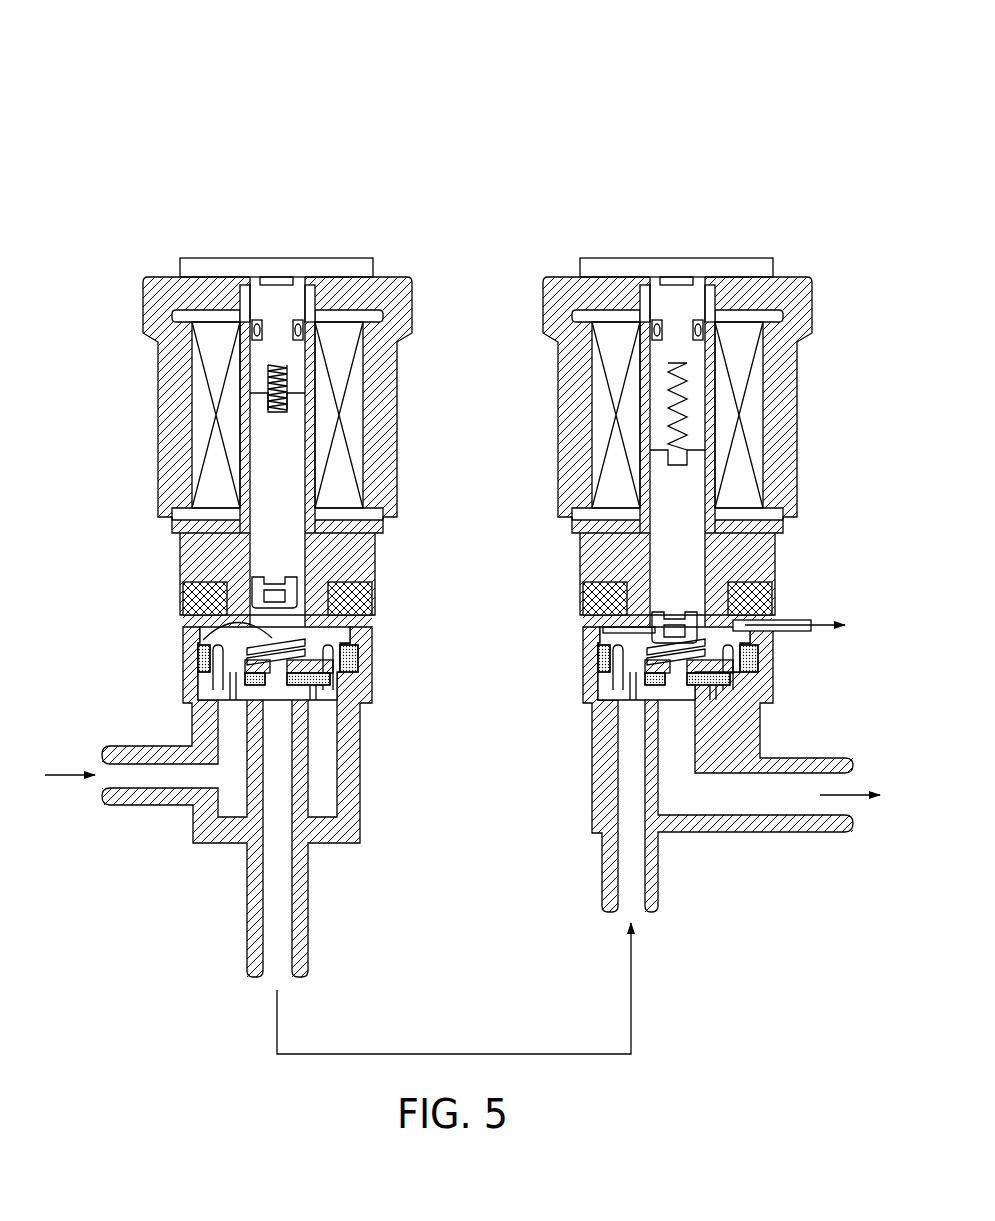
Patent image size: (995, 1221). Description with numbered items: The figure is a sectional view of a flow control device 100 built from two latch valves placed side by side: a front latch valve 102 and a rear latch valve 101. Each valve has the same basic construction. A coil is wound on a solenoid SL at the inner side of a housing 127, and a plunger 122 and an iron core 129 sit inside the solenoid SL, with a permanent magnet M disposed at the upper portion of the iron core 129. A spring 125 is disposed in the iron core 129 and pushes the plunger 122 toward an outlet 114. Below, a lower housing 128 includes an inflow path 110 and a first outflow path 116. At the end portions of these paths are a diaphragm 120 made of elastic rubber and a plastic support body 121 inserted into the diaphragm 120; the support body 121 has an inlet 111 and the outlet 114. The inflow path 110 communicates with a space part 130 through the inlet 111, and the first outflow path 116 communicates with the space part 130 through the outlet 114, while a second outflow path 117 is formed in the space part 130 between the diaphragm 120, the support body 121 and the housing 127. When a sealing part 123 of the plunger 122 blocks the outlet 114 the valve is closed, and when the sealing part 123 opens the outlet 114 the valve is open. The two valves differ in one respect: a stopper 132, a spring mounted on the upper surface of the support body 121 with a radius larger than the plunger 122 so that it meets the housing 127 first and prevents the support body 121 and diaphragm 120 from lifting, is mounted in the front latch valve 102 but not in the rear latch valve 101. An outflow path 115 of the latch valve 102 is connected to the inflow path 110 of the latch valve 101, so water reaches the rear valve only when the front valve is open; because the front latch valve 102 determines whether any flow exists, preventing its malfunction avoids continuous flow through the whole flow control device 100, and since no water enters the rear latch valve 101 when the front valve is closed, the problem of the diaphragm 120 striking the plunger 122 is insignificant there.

The flow control device 100 is at (359, 28).
The latch valve 101 is at (560, 188).
The latch valve 102 is at (160, 188).
The permanent magnet M is at (283, 280).
The iron core 129 is at (297, 292).
The spring 125 is at (287, 370).
The solenoid SL is at (350, 415).
The plunger 122 is at (292, 460).
The housing 127 is at (388, 510).
The space part 130 is at (377, 598).
The sealing part 123 is at (203, 590).
The stopper 132 is at (245, 621).
The inlet 111 is at (207, 660).
The support body 121 is at (347, 663).
The diaphragm 120 is at (357, 674).
The inflow path 110 is at (230, 727).
The outlet 114 is at (297, 700).
The lower housing 128 is at (168, 797).
The outflow path 115 is at (270, 927).
The second outflow path 117 is at (778, 622).
The first outflow path 116 is at (813, 827).